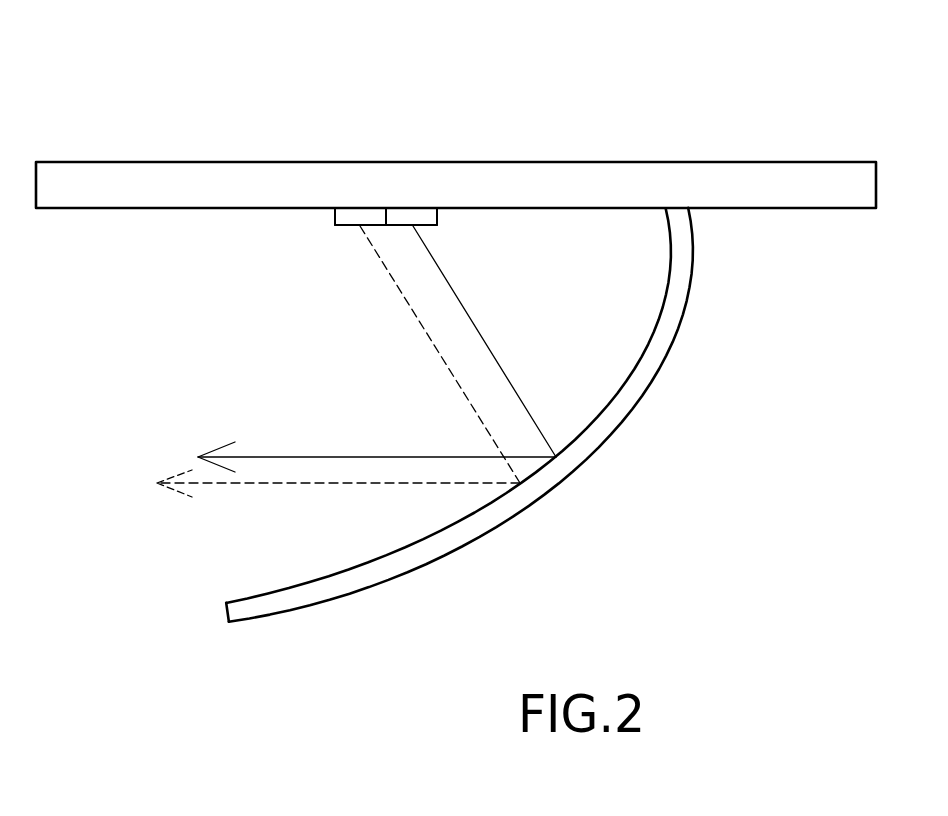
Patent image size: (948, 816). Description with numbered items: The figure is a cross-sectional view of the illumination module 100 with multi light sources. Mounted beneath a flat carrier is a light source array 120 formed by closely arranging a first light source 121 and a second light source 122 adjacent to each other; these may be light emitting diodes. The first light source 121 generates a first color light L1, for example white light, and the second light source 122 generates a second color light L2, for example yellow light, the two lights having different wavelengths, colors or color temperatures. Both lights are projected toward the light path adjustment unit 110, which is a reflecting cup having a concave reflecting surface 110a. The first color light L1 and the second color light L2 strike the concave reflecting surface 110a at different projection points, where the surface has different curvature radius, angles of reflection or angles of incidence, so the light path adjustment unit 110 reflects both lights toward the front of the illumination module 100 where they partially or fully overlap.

The illumination module with multi light sources 100 is at (831, 97).
The light path adjustment unit 110 is at (625, 397).
The concave reflecting surface 110a is at (252, 595).
The light source array 120 is at (475, 103).
The first light source 121 is at (417, 212).
The second light source 122 is at (356, 212).
The first color light L1 is at (363, 349).
The second color light L2 is at (319, 361).